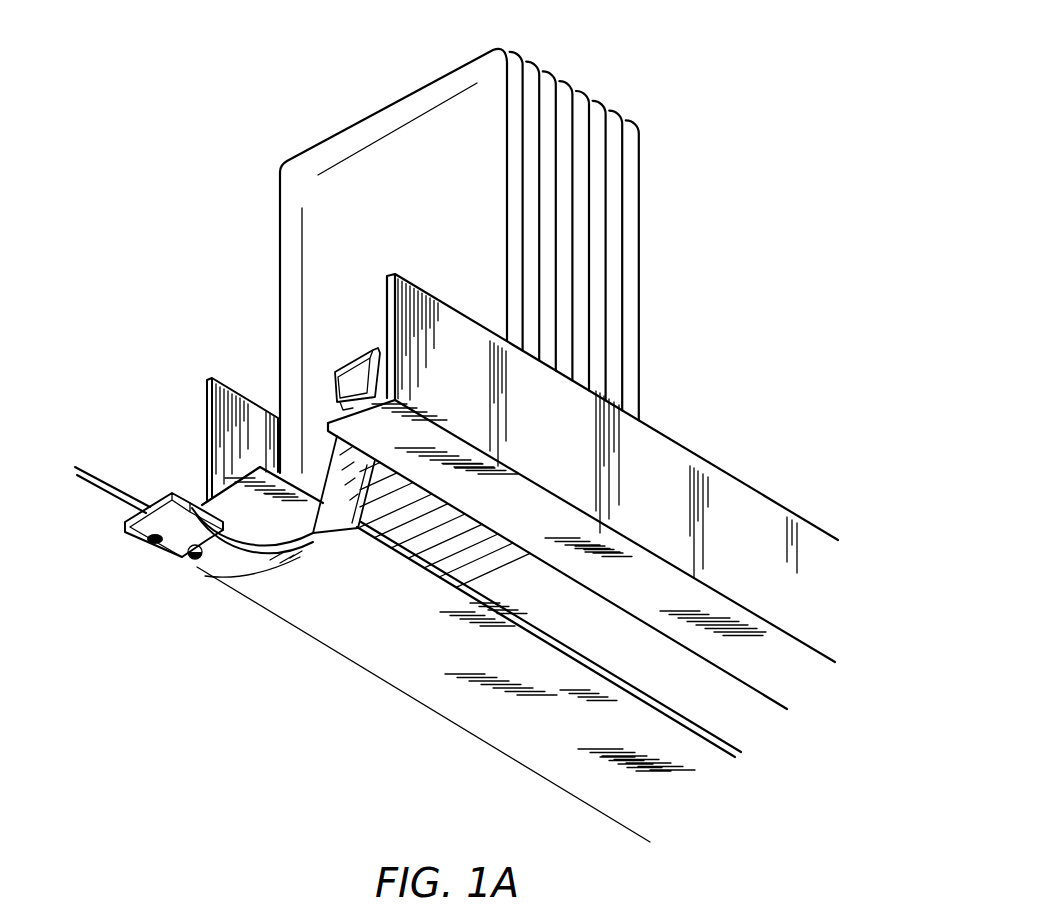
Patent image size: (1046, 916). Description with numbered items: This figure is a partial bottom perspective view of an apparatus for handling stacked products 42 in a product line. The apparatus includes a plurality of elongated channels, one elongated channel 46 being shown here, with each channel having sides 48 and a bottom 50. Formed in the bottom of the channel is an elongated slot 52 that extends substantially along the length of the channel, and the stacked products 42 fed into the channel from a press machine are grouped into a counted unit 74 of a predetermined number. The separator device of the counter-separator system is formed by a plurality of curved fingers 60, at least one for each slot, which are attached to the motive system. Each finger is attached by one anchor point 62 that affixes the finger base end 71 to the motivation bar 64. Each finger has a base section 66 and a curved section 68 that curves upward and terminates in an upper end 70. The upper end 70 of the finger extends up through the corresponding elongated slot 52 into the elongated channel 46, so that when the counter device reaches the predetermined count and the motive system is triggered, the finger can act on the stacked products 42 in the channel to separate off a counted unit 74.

The stacked products 42 is at (302, 177).
The counted unit 74 is at (586, 92).
The elongated channel 46 is at (263, 384).
The sides 48 is at (231, 393).
The bottom 50 is at (232, 482).
The elongated slot 52 is at (731, 714).
The curved finger 60 is at (306, 562).
The anchor point 62 is at (197, 565).
The motivation bar 64 is at (123, 525).
The base section 66 is at (236, 576).
The curved section 68 is at (367, 507).
The upper end 70 is at (365, 355).
The finger base end 71 is at (148, 540).